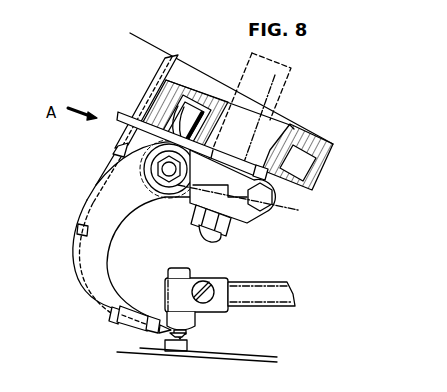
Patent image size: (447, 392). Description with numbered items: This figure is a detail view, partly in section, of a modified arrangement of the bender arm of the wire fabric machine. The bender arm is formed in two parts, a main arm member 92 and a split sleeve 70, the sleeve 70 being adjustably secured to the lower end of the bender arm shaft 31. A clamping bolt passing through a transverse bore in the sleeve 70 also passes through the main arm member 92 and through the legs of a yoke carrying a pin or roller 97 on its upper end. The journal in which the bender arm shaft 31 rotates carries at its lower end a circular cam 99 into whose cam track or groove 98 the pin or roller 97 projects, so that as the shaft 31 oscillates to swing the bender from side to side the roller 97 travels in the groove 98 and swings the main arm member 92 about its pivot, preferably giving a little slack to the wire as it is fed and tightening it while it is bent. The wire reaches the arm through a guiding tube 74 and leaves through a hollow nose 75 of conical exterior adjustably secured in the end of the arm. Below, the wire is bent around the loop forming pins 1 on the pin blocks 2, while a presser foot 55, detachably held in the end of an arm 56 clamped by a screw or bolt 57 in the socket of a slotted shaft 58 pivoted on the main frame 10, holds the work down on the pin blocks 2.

The loop forming pins 1 is at (184, 335).
The pin blocks 2 is at (173, 349).
The main frame 10 is at (188, 177).
The bender arm shaft 31 is at (272, 87).
The presser foot 55 is at (187, 324).
The arm 56 is at (165, 288).
The screw or bolt 57 is at (208, 288).
The slotted shaft 58 is at (279, 283).
The split sleeve 70 is at (249, 226).
The guiding tube 74 is at (150, 94).
The hollow nose 75 is at (113, 318).
The main arm member 92 is at (131, 228).
The pin or roller 97 is at (187, 112).
The cam track or groove 98 is at (298, 163).
The circular cam 99 is at (311, 157).